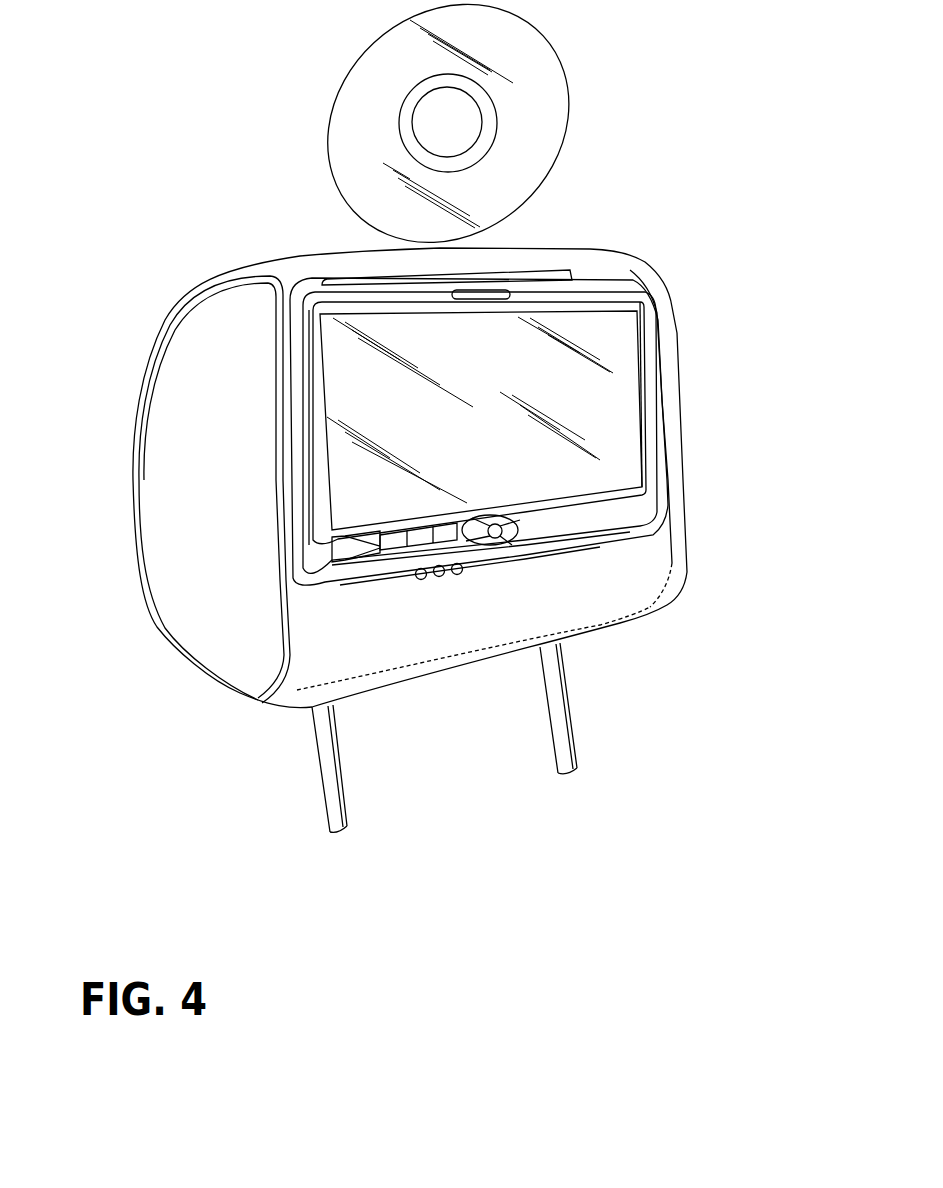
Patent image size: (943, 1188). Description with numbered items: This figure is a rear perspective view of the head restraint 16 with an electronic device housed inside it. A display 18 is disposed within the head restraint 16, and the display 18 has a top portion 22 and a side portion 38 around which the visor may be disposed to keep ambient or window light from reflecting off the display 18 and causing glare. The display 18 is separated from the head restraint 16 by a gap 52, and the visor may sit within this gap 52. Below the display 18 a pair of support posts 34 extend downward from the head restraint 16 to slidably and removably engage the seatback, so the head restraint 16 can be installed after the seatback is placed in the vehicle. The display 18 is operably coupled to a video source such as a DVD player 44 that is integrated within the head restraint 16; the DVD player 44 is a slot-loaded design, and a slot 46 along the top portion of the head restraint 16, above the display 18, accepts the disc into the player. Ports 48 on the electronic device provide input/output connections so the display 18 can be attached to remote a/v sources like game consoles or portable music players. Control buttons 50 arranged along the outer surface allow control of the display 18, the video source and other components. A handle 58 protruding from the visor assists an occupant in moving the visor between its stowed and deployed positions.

The head restraint 16 is at (205, 314).
The display 18 is at (573, 402).
The top portion 22 is at (583, 303).
The support posts 34 is at (337, 793).
The side portion 38 is at (322, 379).
The DVD player 44 is at (338, 284).
The slot 46 is at (477, 273).
The ports 48 is at (421, 580).
The control buttons 50 is at (393, 542).
The gap 52 is at (319, 521).
The handle 58 is at (510, 291).